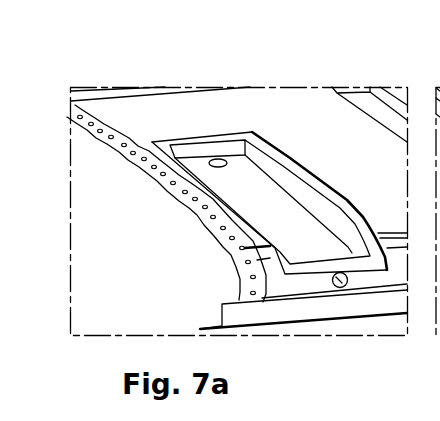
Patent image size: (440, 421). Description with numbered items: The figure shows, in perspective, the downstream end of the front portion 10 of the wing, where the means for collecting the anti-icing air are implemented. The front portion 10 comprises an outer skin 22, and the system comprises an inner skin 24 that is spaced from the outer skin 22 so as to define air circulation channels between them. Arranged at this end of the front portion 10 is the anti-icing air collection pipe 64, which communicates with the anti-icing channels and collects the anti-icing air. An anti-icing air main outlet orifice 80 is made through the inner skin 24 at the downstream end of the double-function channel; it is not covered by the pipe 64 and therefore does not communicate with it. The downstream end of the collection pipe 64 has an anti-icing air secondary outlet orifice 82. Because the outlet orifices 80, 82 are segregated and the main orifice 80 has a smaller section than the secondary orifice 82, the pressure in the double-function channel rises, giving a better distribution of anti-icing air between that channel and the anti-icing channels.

The front portion of the wing 10 is at (303, 62).
The outer skin 22 is at (236, 270).
The inner skin 24 is at (274, 286).
The anti-icing air collection pipe 64 is at (205, 147).
The anti-icing air main outlet orifice 80 is at (339, 288).
The anti-icing air secondary outlet orifice 82 is at (214, 164).